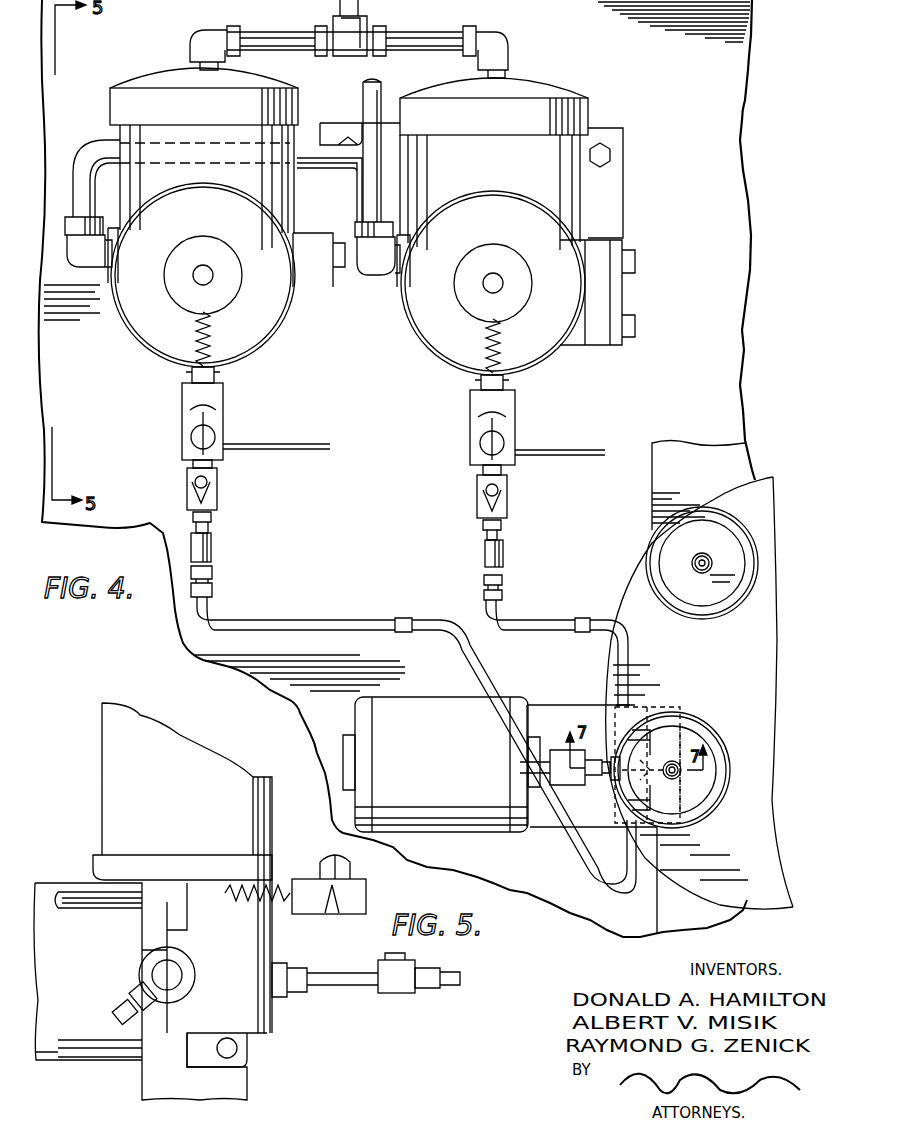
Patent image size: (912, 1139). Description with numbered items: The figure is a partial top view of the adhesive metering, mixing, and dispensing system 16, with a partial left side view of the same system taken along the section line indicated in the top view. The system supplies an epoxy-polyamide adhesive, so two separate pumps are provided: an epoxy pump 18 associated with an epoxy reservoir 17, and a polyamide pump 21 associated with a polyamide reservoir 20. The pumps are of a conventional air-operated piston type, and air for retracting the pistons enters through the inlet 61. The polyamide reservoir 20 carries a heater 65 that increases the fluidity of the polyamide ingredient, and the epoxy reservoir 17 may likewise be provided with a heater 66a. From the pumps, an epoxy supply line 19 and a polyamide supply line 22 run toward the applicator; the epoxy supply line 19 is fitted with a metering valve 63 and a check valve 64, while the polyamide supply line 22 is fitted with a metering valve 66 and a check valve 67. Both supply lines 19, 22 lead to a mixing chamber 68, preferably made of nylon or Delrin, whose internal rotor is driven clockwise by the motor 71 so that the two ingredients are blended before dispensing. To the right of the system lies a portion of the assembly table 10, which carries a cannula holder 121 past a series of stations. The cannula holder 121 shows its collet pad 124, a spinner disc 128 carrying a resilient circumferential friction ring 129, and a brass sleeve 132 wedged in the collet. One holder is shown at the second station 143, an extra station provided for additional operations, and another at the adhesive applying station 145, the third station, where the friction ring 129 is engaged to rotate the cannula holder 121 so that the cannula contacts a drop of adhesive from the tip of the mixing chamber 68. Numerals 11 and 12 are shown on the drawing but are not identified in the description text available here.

In FIG. 4, the assembly table 10 is at (796, 476).
In FIG. 4, the support plate 11 is at (733, 445).
In FIG. 4, the housing wall 12 is at (728, 117).
In FIG. 4, the adhesive metering, mixing, and dispensing system 16 is at (652, 210).
In FIG. 4, the epoxy reservoir 17 is at (540, 355).
In FIG. 4, the epoxy pump 18 is at (570, 113).
In FIG. 4, the epoxy supply line 19 is at (487, 387).
In FIG. 4, the polyamide reservoir 20 is at (150, 323).
In FIG. 5, the polyamide reservoir 20 is at (122, 797).
In FIG. 4, the polyamide pump 21 is at (123, 107).
In FIG. 5, the polyamide pump 21 is at (52, 1045).
In FIG. 4, the polyamide supply line 22 is at (213, 380).
In FIG. 5, the polyamide supply line 22 is at (355, 985).
In FIG. 4, the inlet 61 is at (373, 88).
In FIG. 5, the inlet 61 is at (130, 998).
In FIG. 4, the metering valve 63 is at (500, 508).
In FIG. 4, the check valve 64 is at (497, 552).
In FIG. 4, the heater 65 is at (187, 420).
In FIG. 5, the heater 65 is at (311, 898).
In FIG. 4, the metering valve 66 is at (187, 500).
In FIG. 5, the metering valve 66 is at (405, 985).
In FIG. 4, the heater 66a is at (505, 426).
In FIG. 4, the check valve 67 is at (213, 547).
In FIG. 4, the mixing chamber 68 is at (607, 786).
In FIG. 4, the motor 71 is at (485, 810).
In FIG. 4, the cannula holder 121 is at (752, 605).
In FIG. 4, the collet pad 124 is at (725, 542).
In FIG. 4, the spinner disc 128 is at (747, 552).
In FIG. 4, the resilient circumferential friction ring 129 is at (730, 620).
In FIG. 4, the brass sleeve 132 is at (700, 573).
In FIG. 4, the second station 143 is at (634, 555).
In FIG. 4, the adhesive applying station 145 is at (728, 722).